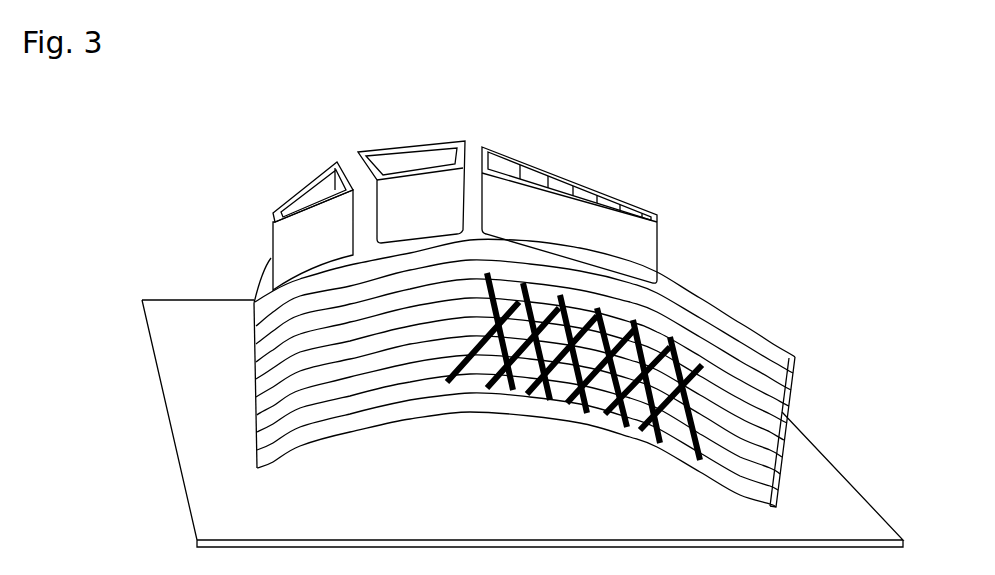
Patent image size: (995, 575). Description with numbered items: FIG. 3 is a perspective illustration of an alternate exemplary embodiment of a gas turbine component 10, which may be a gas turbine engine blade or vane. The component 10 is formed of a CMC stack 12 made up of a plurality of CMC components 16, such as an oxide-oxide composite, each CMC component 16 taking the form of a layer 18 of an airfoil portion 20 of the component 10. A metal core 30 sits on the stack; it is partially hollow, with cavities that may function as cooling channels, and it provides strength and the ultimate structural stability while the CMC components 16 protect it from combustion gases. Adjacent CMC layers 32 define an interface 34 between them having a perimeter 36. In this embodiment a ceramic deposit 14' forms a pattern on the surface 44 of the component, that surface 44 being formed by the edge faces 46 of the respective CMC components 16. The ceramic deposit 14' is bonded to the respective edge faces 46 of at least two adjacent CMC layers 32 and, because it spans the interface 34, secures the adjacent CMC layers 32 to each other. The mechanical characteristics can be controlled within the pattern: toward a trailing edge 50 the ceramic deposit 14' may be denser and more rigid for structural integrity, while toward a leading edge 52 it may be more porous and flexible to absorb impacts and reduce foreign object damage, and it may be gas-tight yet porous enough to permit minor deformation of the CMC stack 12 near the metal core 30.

The gas turbine component 10 is at (738, 202).
The CMC stack 12 is at (807, 389).
The ceramic deposit 14' is at (600, 368).
The CMC component 16 is at (339, 450).
The layer 18 is at (340, 455).
The airfoil portion 20 is at (481, 416).
The metal core 30 is at (292, 171).
The adjacent CMC layers 32 is at (292, 350).
The interface 34 is at (720, 428).
The perimeter 36 is at (750, 438).
The surface 44 is at (431, 293).
The edge face 46 is at (725, 383).
The trailing edge 50 is at (773, 477).
The leading edge 52 is at (257, 375).